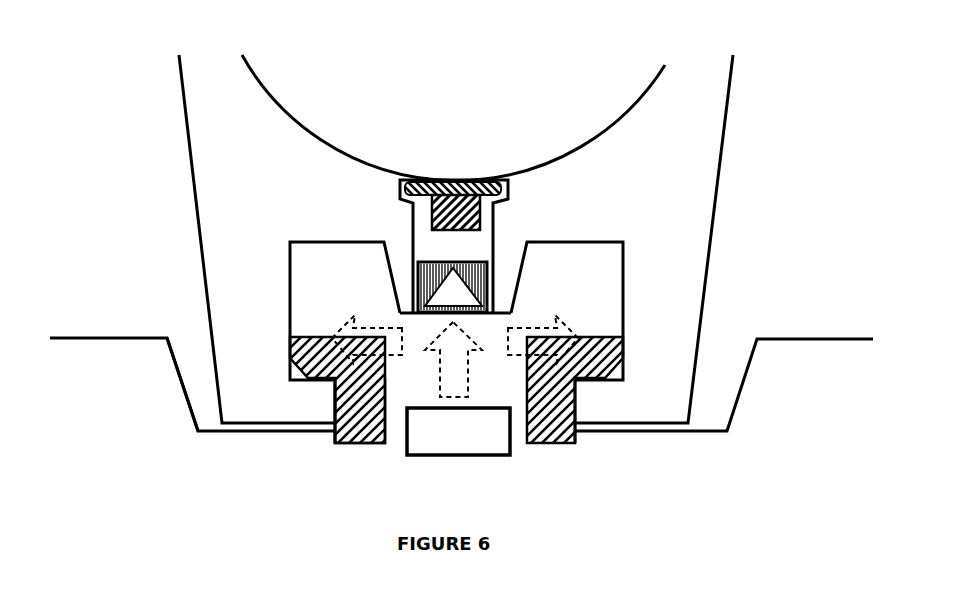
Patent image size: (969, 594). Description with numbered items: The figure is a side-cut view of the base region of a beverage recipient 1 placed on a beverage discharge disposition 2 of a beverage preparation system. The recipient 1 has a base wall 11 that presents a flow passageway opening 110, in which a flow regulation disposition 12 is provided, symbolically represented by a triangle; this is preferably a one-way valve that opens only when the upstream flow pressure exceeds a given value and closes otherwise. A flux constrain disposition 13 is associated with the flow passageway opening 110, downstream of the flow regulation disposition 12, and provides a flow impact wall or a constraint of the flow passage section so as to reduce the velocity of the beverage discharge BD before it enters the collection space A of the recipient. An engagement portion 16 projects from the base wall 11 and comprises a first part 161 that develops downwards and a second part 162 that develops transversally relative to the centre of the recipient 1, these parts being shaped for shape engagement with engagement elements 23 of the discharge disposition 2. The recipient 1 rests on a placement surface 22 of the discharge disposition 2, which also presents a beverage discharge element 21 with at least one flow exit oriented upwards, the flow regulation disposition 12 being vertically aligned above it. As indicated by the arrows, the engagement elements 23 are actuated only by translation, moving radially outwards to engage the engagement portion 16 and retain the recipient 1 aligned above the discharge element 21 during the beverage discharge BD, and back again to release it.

The collection space A is at (453, 98).
The beverage recipient 1 is at (437, 239).
The base wall 11 is at (418, 245).
The flow passageway opening 110 is at (503, 246).
The flow regulation disposition 12 is at (452, 276).
The flux constrain disposition 13 is at (452, 193).
The engagement portion 16 is at (384, 342).
The first part 161 is at (336, 363).
The second part 162 is at (332, 410).
The beverage discharge disposition 2 is at (461, 373).
The beverage discharge element 21 is at (443, 365).
The placement surface 22 is at (173, 384).
The engagement elements 23 is at (573, 377).
The beverage discharge BD is at (459, 421).